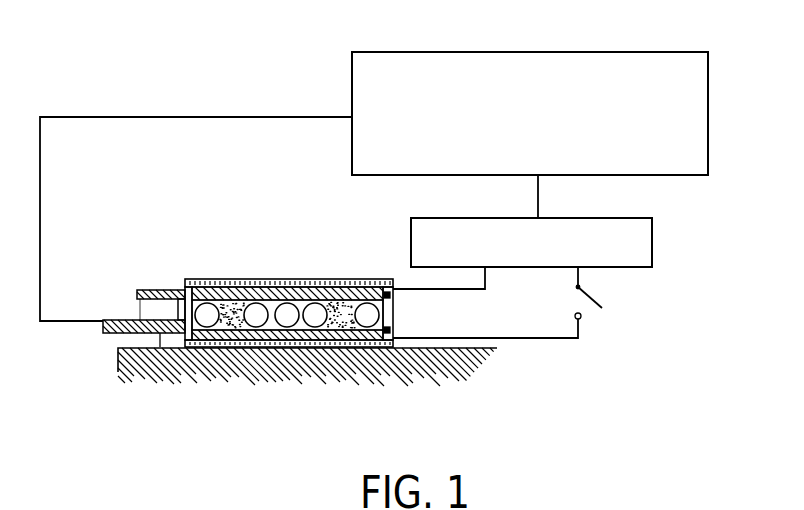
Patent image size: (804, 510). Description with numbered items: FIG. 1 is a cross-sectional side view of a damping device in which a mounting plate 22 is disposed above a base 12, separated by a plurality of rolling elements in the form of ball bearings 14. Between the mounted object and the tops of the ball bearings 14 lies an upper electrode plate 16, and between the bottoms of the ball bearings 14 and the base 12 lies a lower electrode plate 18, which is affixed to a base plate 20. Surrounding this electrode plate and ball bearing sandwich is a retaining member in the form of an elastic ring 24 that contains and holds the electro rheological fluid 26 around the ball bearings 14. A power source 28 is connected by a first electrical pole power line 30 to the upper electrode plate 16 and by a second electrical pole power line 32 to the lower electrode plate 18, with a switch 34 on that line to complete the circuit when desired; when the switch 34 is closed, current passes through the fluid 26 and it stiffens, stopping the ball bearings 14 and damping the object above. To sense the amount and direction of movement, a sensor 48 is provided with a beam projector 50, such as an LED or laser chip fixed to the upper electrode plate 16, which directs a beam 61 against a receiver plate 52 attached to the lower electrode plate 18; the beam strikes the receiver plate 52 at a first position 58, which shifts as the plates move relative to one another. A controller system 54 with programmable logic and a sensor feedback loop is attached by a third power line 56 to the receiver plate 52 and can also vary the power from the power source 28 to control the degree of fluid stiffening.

The base 12 is at (408, 368).
The ball bearings 14 is at (290, 312).
The upper electrode plate 16 is at (319, 292).
The lower electrode plate 18 is at (197, 347).
The base plate 20 is at (336, 350).
The mounting plate 22 is at (368, 280).
The elastic ring 24 is at (387, 308).
The electro rheological fluid 26 is at (252, 350).
The power source 28 is at (642, 233).
The first electrical pole power line 30 is at (487, 283).
The second electrical pole power line 32 is at (568, 340).
The switch 34 is at (595, 300).
The sensor 48 is at (113, 253).
The beam projector 50 is at (143, 290).
The receiver plate 52 is at (118, 347).
The controller system 54 is at (420, 52).
The third power line 56 is at (98, 117).
The first position 58 is at (163, 348).
The beam 61 is at (148, 319).